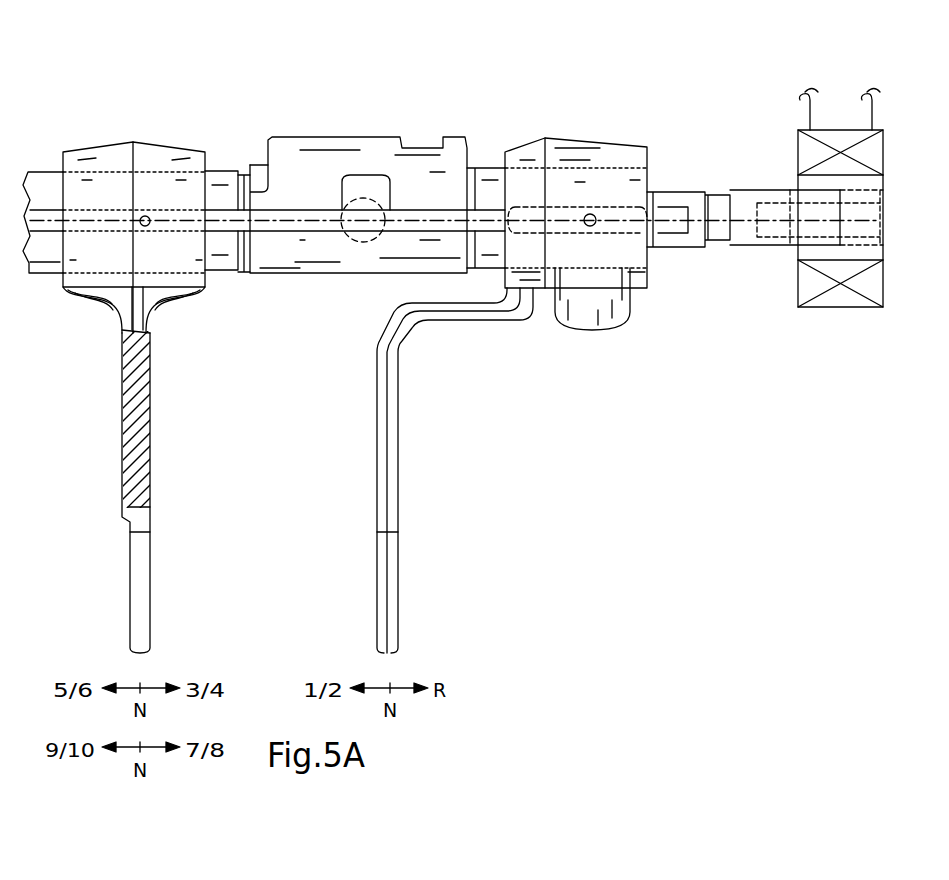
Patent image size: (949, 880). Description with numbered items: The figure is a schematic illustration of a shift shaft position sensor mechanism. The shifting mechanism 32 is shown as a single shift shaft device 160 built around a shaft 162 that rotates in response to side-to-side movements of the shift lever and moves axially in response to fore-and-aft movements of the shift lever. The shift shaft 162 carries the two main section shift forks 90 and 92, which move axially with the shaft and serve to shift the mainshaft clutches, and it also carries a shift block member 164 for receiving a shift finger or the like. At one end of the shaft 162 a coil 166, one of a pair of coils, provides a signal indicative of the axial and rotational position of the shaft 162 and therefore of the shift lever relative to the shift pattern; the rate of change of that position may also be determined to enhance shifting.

The shifting mechanism 32 is at (238, 92).
The shift shaft 162 is at (43, 253).
The shift block member 164 is at (358, 128).
The single shift shaft device 160 is at (588, 110).
The coil 166 is at (853, 324).
The shift fork 92 is at (138, 403).
The shift fork 90 is at (390, 440).